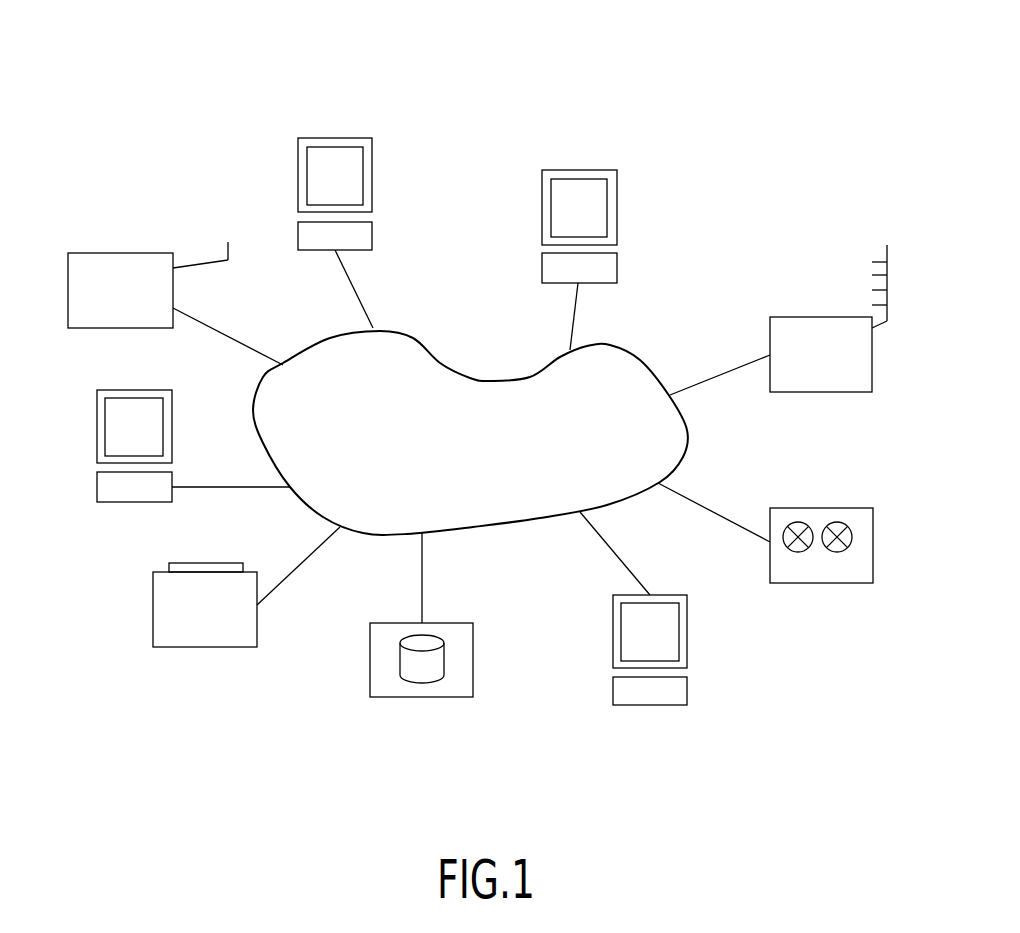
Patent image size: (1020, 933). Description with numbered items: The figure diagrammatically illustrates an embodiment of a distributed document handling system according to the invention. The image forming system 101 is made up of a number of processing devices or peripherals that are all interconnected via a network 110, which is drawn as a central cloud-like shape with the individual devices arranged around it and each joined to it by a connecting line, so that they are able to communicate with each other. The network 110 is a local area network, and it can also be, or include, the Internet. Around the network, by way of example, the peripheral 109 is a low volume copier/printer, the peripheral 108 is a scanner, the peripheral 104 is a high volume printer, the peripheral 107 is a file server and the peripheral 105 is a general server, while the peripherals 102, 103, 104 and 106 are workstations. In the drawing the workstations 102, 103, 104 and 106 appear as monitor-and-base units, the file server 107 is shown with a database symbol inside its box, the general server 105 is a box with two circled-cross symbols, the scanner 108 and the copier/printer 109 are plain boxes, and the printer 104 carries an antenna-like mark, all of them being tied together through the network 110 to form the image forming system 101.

The image forming system 101 is at (648, 78).
The workstation 102 is at (340, 138).
The workstation 103 is at (585, 170).
The peripheral (high volume printer / workstation) 104 is at (100, 404).
The general server 105 is at (833, 508).
The workstation 106 is at (687, 688).
The file server 107 is at (428, 697).
The scanner 108 is at (193, 647).
The low volume copier/printer 109 is at (113, 253).
The network 110 is at (488, 455).